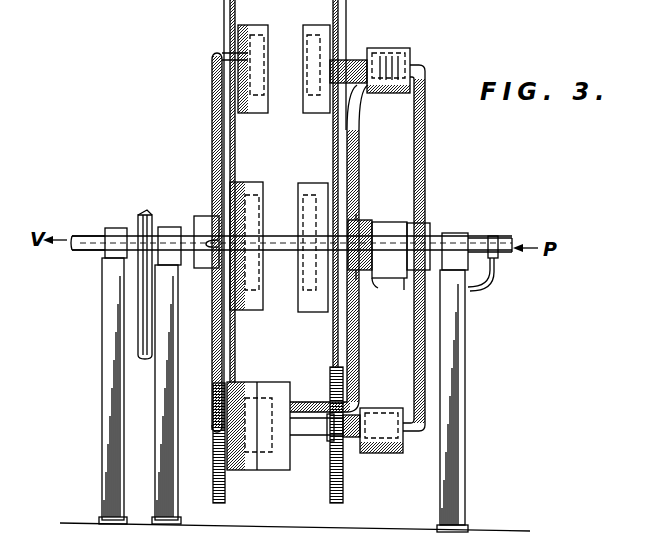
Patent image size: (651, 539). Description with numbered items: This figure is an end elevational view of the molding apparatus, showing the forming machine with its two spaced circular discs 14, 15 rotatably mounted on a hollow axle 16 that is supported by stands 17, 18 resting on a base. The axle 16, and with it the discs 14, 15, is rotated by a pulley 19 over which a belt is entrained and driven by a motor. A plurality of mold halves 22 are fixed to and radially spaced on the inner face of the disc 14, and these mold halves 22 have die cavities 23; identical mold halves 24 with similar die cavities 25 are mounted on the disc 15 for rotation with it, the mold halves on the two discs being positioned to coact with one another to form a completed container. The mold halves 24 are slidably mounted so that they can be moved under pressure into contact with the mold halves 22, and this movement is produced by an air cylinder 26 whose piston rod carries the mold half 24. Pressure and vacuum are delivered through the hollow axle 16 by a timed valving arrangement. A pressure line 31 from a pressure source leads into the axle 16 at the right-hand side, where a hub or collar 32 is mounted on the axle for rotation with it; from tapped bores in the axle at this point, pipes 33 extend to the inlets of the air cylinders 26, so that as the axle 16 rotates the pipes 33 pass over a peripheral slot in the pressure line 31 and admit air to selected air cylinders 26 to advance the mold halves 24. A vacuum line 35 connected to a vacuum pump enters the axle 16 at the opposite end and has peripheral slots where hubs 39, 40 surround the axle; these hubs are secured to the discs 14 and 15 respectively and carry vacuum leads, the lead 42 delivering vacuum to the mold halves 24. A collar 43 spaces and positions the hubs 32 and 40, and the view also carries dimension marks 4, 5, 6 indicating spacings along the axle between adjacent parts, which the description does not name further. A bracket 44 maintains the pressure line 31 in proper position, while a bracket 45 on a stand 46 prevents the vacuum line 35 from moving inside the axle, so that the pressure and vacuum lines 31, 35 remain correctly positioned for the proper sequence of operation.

The carriage block 4 is at (202, 210).
The clearance gap 5 is at (356, 214).
The guide block 6 is at (410, 214).
The circular disc 14 is at (223, 8).
The circular disc 15 is at (347, 22).
The axle 16 is at (441, 235).
The stand 17 is at (166, 505).
The stand 18 is at (452, 505).
The pulley 19 is at (147, 214).
The mold halves 22 is at (258, 28).
The die cavities 23 is at (266, 98).
The mold halves 24 is at (318, 25).
The die cavities 25 is at (305, 110).
The air cylinder 26 is at (396, 50).
The pressure line 31 is at (508, 245).
The hub or collar 32 is at (405, 290).
The pipes 33 is at (426, 130).
The vacuum line 35 is at (79, 250).
The hub 39 is at (216, 262).
The hub 40 is at (373, 278).
The vacuum lead 42 is at (352, 160).
The collar 43 is at (386, 232).
The bracket 44 is at (488, 288).
The bracket 45 is at (113, 232).
The stand 46 is at (103, 345).